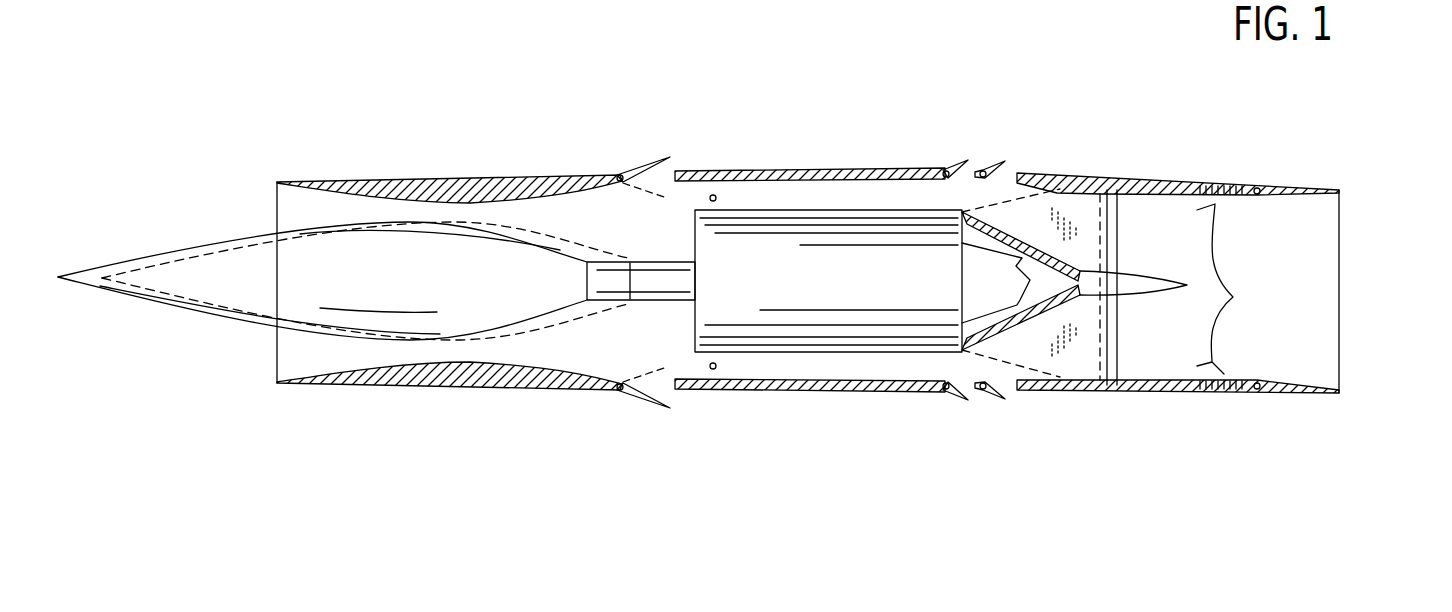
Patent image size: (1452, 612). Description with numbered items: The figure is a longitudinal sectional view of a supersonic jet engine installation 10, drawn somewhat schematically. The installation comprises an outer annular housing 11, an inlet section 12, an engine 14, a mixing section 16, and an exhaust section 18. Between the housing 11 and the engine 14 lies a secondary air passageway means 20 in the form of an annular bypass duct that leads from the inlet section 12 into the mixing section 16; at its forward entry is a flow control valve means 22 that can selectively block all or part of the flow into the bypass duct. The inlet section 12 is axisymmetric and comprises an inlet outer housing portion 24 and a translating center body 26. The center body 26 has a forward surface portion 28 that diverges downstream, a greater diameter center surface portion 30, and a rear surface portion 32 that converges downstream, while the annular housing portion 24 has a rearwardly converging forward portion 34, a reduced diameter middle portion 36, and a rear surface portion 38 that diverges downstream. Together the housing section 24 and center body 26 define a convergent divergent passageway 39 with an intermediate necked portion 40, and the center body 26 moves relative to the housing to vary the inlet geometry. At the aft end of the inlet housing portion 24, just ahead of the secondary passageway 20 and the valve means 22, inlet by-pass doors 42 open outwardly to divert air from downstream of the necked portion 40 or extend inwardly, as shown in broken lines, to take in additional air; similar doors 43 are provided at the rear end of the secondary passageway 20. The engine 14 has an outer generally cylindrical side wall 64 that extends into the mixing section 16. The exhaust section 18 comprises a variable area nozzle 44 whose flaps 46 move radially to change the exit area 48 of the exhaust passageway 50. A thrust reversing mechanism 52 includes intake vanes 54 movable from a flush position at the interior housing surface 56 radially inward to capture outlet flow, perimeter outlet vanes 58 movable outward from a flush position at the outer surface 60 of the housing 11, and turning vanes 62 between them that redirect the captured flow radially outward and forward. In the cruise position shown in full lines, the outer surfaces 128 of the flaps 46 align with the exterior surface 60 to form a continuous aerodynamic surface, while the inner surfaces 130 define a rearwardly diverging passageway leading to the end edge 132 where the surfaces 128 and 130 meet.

The supersonic jet engine installation 10 is at (284, 117).
The outer annular housing 11 is at (810, 284).
The inlet section 12 is at (284, 165).
The engine 14 is at (852, 190).
The mixing section 16 is at (1030, 170).
The exhaust section 18 is at (1284, 162).
The secondary air passageway means 20 is at (790, 392).
The flow control valve means 22 is at (716, 194).
The inlet outer housing portion 24 is at (450, 280).
The translating center body 26 is at (376, 292).
The forward surface portion 28 is at (376, 292).
The center surface portion 30 is at (376, 292).
The rear surface portion 32 is at (545, 246).
The forward portion 34 is at (450, 238).
The middle portion 36 is at (450, 238).
The rear surface portion 38 is at (541, 192).
The convergent divergent passageway 39 is at (320, 206).
The necked portion 40 is at (432, 352).
The inlet by-pass doors 42 is at (642, 165).
The doors 43 is at (1000, 165).
The variable area nozzle 44 is at (1336, 175).
The flaps 46 is at (1288, 200).
The exit area 48 is at (1343, 277).
The exhaust passageway 50 is at (1315, 297).
The thrust reversing mechanism 52 is at (1178, 310).
The intake vanes 54 is at (1235, 289).
The interior housing surface 56 is at (1178, 323).
The perimeter outlet vanes 58 is at (1178, 287).
The outer surface 60 is at (1121, 398).
The turning vanes 62 is at (1178, 298).
The outer generally cylindrical side wall 64 is at (855, 354).
The outer surfaces 128 is at (1300, 398).
The inner surfaces 130 is at (1288, 380).
The end edge 132 is at (1337, 396).